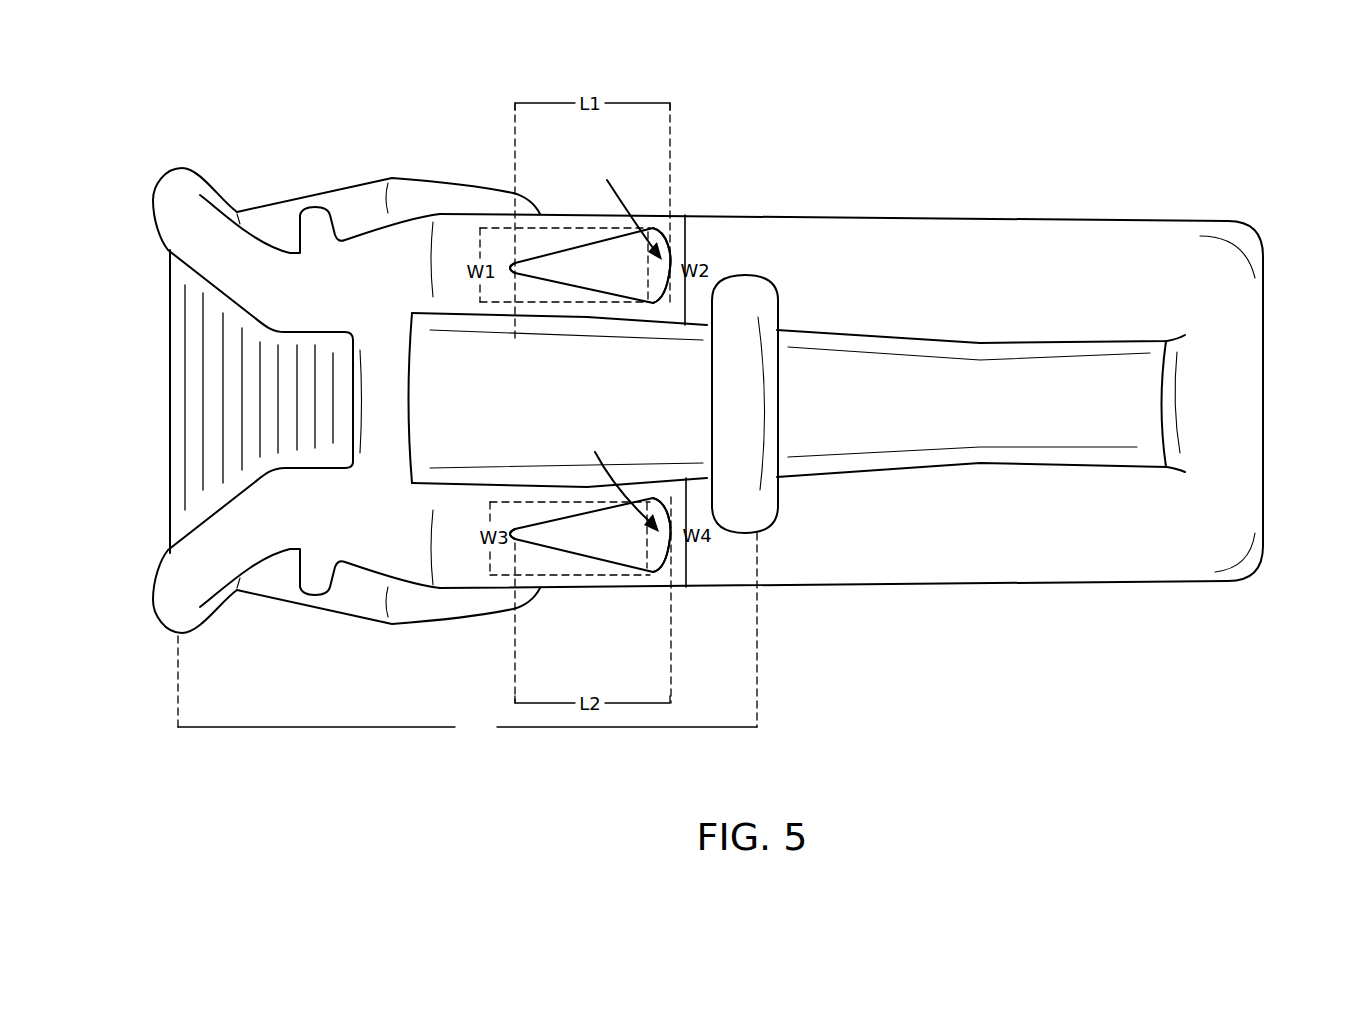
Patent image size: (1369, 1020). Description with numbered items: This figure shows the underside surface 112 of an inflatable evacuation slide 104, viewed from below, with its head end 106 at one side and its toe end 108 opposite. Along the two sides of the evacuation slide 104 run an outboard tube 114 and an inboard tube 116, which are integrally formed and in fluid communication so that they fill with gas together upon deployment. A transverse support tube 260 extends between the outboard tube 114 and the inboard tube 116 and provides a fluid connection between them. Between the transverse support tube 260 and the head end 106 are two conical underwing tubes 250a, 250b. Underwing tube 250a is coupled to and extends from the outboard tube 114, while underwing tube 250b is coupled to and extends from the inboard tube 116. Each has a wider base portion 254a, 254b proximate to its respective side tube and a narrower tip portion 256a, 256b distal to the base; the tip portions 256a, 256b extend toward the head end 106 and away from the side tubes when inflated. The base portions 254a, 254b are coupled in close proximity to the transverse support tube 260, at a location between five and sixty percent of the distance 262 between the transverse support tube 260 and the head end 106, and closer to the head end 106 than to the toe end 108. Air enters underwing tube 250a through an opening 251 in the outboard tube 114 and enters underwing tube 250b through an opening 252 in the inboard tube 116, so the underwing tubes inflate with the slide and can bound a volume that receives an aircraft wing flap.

The evacuation slide 104 is at (414, 140).
The head end 106 is at (173, 400).
The toe end 108 is at (1263, 400).
The underside surface 112 is at (797, 400).
The outboard tube 114 is at (884, 232).
The inboard tube 116 is at (907, 558).
The underwing tube 250a is at (593, 288).
The underwing tube 250b is at (605, 563).
The opening 251 is at (618, 204).
The opening 252 is at (616, 476).
The base portion 254a is at (657, 288).
The base portion 254b is at (650, 563).
The tip portion 256a is at (537, 272).
The tip portion 256b is at (533, 537).
The transverse support tube 260 is at (735, 378).
The distance 262 is at (467, 635).